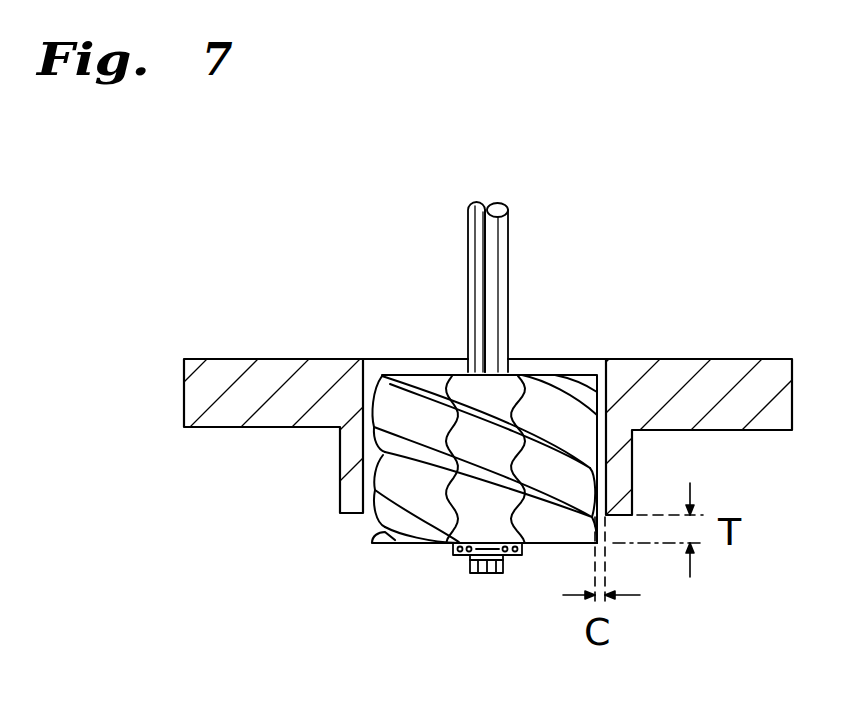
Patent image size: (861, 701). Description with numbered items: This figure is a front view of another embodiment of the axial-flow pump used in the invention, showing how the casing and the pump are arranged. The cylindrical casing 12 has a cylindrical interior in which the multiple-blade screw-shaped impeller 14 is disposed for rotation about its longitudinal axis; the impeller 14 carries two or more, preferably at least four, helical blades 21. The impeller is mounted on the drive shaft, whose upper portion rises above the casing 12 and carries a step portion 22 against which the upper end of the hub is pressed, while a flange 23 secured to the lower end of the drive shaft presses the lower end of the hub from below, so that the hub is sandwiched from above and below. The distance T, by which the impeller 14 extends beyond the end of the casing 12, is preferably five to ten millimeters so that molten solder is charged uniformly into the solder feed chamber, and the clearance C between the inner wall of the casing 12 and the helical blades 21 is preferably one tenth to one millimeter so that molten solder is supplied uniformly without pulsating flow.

The cylindrical casing 12 is at (350, 450).
The multiple-blade screw-shaped impeller 14 is at (390, 548).
The blades 21 is at (393, 378).
The step portion 22 is at (467, 325).
The flange 23 is at (462, 557).